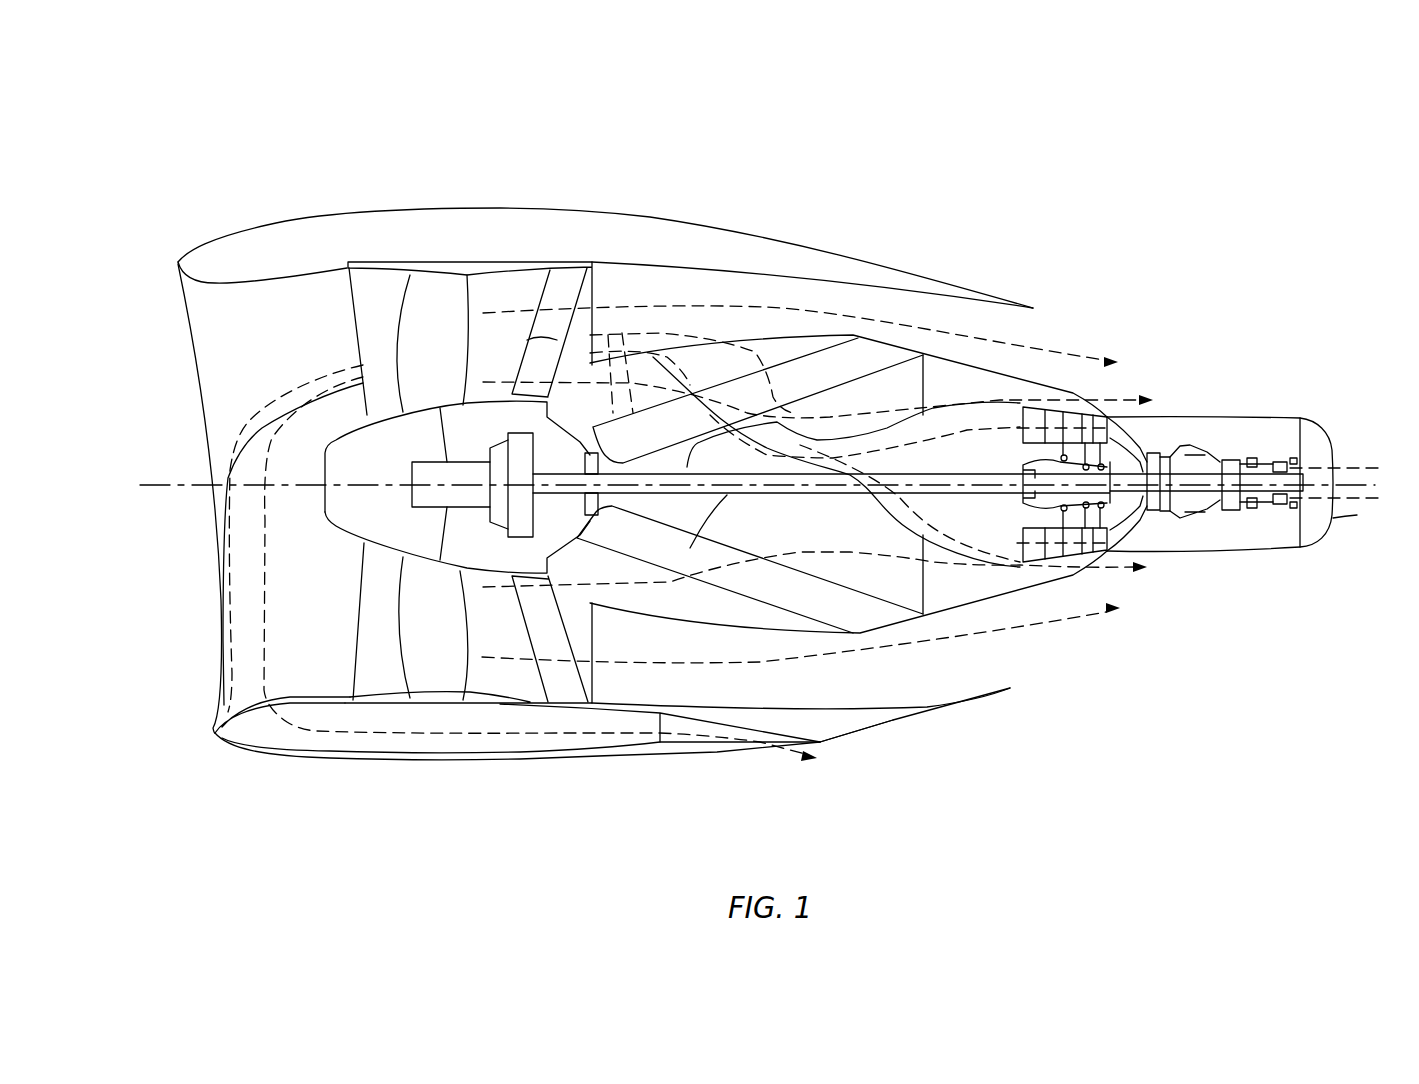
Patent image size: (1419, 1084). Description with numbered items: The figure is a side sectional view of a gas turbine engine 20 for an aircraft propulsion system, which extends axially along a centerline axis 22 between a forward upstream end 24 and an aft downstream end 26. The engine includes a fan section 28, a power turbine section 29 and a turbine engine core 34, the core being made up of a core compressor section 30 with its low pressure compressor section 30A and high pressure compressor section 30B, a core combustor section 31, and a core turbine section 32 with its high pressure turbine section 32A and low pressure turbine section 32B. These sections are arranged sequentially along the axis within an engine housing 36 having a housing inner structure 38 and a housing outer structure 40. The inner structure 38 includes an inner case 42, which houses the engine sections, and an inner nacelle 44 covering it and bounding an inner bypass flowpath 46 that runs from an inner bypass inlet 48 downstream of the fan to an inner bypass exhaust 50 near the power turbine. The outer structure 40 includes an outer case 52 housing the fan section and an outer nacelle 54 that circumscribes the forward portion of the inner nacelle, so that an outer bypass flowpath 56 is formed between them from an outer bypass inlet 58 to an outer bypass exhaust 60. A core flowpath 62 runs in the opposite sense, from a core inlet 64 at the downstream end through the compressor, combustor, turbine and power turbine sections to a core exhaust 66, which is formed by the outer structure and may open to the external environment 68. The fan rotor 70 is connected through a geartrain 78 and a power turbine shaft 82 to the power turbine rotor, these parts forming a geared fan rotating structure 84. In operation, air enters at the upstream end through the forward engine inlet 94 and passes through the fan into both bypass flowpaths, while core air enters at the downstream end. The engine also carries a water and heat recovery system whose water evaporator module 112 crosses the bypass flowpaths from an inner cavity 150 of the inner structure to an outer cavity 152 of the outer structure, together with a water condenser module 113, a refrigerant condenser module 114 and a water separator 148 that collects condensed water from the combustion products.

The gas turbine engine 20 is at (240, 142).
The centerline axis 22 is at (145, 492).
The upstream end 24 is at (178, 263).
The downstream end 26 is at (1333, 442).
The fan section 28 is at (436, 256).
The power turbine section 29 is at (1073, 585).
The core compressor section 30 is at (1230, 607).
The low pressure compressor section 30A is at (1269, 527).
The high pressure compressor section 30B is at (1224, 521).
The core combustor section 31 is at (1195, 531).
The core turbine section 32 is at (1133, 630).
The high pressure turbine section 32A is at (1174, 527).
The low pressure turbine section 32B is at (1158, 527).
The turbine engine core 34 is at (1241, 432).
The engine housing 36 is at (936, 234).
The housing inner structure 38 is at (827, 332).
The housing outer structure 40 is at (767, 228).
The inner case 42 is at (1200, 446).
The inner nacelle 44 is at (780, 340).
The inner bypass flowpath 46 is at (882, 405).
The inner bypass inlet 48 is at (533, 398).
The inner bypass exhaust 50 is at (1083, 398).
The outer case 52 is at (495, 262).
The outer nacelle 54 is at (577, 202).
The outer bypass flowpath 56 is at (618, 298).
The outer bypass inlet 58 is at (545, 337).
The outer bypass exhaust 60 is at (1023, 333).
The core flowpath 62 is at (1312, 440).
The core inlet 64 is at (1357, 515).
The core exhaust 66 is at (755, 752).
The environment 68 is at (609, 848).
The fan rotor 70 is at (388, 601).
The geartrain 78 is at (517, 519).
The power turbine shaft 82 is at (750, 564).
The fan rotating structure 84 is at (751, 504).
The forward engine inlet 94 is at (200, 375).
The water evaporator module 112 is at (693, 327).
The water condenser module 113 is at (287, 384).
The refrigerant condenser module 114 is at (724, 600).
The water separator 148 is at (365, 762).
The inner cavity 150 is at (842, 545).
The outer cavity 152 is at (843, 727).